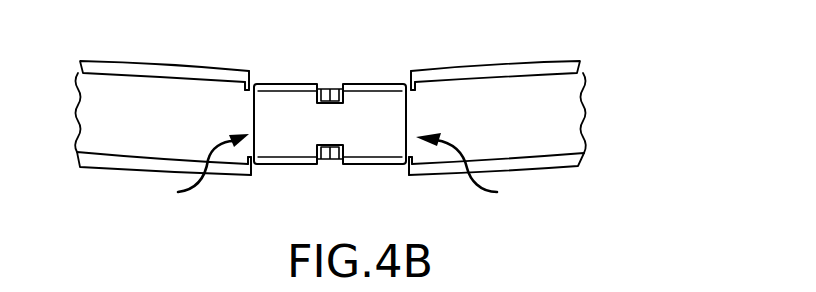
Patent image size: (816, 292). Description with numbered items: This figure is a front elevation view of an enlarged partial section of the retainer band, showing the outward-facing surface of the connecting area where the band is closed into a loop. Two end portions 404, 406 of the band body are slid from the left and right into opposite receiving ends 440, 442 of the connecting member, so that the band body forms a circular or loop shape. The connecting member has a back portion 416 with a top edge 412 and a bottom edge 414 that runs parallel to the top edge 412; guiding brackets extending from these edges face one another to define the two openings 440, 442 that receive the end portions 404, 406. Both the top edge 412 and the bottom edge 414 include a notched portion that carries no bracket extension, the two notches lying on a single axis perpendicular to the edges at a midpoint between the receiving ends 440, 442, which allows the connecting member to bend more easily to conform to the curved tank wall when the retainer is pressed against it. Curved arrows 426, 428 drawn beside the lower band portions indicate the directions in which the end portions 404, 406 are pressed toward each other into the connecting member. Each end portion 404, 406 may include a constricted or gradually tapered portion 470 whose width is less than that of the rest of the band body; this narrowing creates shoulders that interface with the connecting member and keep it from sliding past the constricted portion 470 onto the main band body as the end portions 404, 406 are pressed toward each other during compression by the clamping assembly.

The end portion 404 is at (143, 68).
The end portion 406 is at (541, 90).
The top edge 412 is at (287, 84).
The bottom edge 414 is at (283, 165).
The back portion 416 is at (374, 93).
The first lower flange 426 is at (164, 170).
The second lower flange 428 is at (496, 168).
The receiving end 440 is at (253, 125).
The receiving end 442 is at (407, 125).
The constricted portion 470 is at (63, 285).